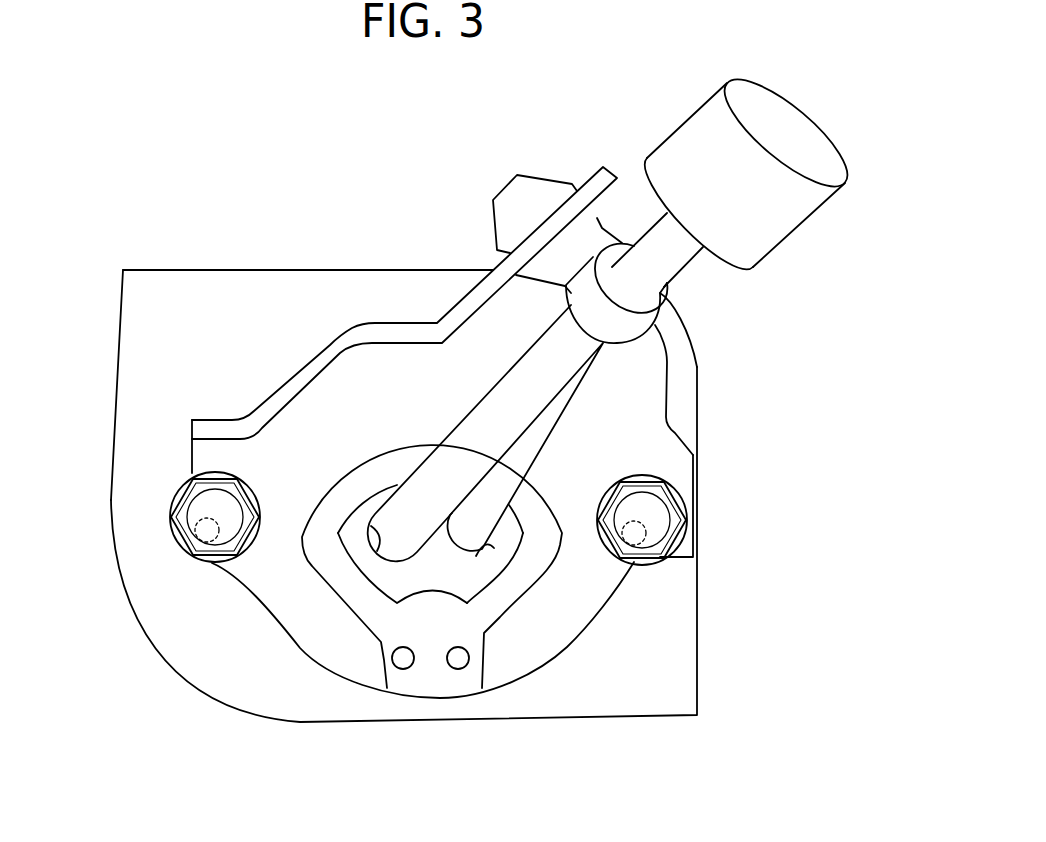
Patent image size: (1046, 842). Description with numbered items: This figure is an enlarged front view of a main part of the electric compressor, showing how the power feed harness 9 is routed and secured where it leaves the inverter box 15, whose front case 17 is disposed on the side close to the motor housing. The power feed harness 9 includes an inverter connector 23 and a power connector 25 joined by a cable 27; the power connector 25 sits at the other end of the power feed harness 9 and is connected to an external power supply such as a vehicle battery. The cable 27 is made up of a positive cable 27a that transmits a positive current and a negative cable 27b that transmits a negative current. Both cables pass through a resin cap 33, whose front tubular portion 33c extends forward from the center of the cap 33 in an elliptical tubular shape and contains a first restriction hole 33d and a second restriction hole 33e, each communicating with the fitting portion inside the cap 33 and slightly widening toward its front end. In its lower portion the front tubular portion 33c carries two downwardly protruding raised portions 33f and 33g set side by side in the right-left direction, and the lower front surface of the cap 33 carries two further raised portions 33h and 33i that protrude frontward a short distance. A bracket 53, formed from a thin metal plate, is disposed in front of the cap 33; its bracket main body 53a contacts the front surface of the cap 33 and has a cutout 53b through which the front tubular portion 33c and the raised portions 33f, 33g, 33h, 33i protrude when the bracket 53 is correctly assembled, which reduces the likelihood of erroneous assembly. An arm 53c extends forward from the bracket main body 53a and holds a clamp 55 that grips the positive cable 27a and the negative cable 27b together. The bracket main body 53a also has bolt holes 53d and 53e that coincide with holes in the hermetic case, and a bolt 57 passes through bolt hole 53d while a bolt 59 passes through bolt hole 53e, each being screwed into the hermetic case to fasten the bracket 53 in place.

The power feed harness 9 is at (716, 294).
The inverter box 15 is at (191, 296).
The front case 17 is at (145, 341).
The inverter connector 23 is at (574, 657).
The power connector 25 is at (782, 215).
The cable 27 is at (463, 445).
The positive cable 27a is at (440, 477).
The negative cable 27b is at (497, 475).
The cap 33 is at (426, 686).
The front tubular portion 33c is at (368, 507).
The first restriction hole 33d is at (378, 548).
The second restriction hole 33e is at (478, 552).
The raised portion 33f is at (397, 594).
The raised portion 33g is at (467, 595).
The raised portion 33h is at (400, 670).
The raised portion 33i is at (460, 670).
The bracket 53 is at (678, 472).
The bracket main body 53a is at (636, 410).
The cutout 53b is at (316, 500).
The arm 53c is at (469, 294).
The bolt hole 53d is at (210, 540).
The bolt hole 53e is at (635, 545).
The clamp 55 is at (520, 185).
The bolt 57 is at (212, 518).
The bolt 59 is at (656, 522).